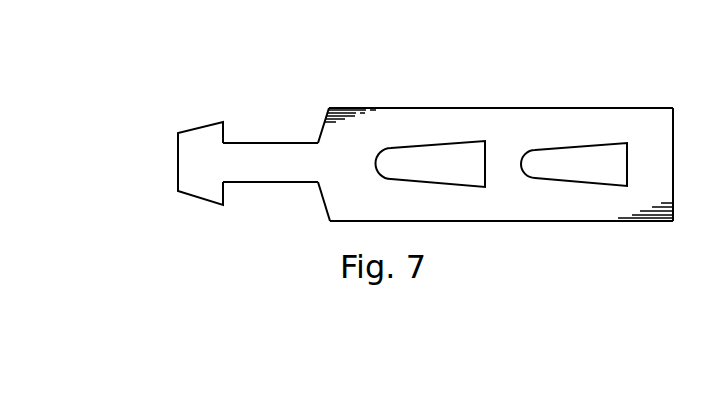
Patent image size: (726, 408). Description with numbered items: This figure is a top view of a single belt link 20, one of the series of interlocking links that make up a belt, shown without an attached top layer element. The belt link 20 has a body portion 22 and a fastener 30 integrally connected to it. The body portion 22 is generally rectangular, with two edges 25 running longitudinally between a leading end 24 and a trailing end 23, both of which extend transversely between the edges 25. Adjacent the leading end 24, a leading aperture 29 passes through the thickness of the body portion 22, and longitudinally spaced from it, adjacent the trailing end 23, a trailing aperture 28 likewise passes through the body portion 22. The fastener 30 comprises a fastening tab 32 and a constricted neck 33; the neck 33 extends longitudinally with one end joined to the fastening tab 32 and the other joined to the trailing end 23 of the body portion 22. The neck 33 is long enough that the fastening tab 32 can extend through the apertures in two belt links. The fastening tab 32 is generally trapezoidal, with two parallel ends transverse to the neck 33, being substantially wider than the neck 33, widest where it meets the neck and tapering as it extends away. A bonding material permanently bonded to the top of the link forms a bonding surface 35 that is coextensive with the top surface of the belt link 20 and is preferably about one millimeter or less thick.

The belt link 20 is at (533, 116).
The body portion 22 is at (362, 167).
The trailing end 23 is at (322, 203).
The leading end 24 is at (674, 120).
The edges 25 is at (417, 107).
The trailing aperture 28 is at (447, 181).
The leading aperture 29 is at (570, 177).
The fastener 30 is at (206, 116).
The fastening tab 32 is at (190, 163).
The neck 33 is at (262, 150).
The bonding surface 35 is at (668, 182).